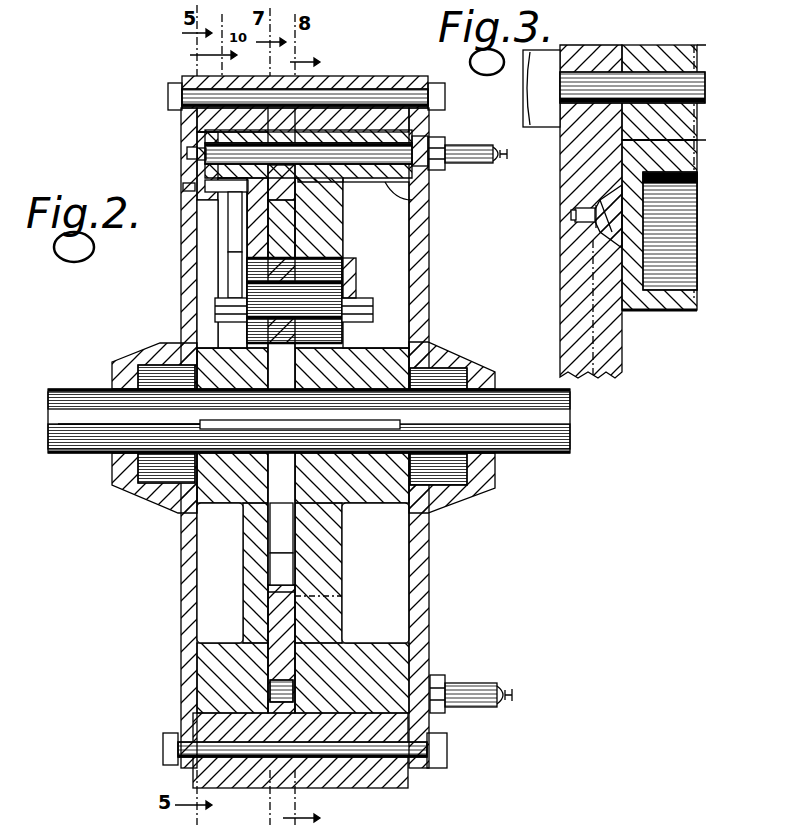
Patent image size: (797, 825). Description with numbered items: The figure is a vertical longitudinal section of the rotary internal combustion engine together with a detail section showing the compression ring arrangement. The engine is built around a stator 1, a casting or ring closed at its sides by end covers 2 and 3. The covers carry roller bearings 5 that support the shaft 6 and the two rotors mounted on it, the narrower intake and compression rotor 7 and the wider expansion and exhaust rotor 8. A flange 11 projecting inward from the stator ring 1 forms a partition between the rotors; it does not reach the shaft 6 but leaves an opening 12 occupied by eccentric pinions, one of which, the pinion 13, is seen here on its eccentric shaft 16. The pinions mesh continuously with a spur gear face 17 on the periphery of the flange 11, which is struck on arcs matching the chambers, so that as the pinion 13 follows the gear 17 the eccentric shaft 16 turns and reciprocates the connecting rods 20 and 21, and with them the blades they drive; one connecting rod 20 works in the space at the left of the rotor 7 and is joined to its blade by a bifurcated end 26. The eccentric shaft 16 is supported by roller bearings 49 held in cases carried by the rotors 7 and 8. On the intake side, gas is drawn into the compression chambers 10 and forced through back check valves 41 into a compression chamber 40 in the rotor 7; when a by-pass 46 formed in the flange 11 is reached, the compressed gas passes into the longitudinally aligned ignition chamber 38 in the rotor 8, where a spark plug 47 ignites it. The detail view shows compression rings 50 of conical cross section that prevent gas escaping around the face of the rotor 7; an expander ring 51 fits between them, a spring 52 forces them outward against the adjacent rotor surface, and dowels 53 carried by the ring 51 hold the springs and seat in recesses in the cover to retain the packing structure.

In FIG. 2, the stator 1 is at (372, 77).
In FIG. 3, the stator 1 is at (645, 50).
In FIG. 2, the end cover 2 is at (185, 291).
In FIG. 3, the end cover 2 is at (565, 333).
In FIG. 2, the end cover 3 is at (430, 277).
In FIG. 2, the roller bearings 5 is at (450, 372).
In FIG. 2, the shaft 6 is at (572, 440).
In FIG. 2, the intake and compression rotor 7 is at (183, 187).
In FIG. 3, the intake and compression rotor 7 is at (620, 150).
In FIG. 2, the expansion and exhaust rotor 8 is at (405, 188).
In FIG. 2, the compression chambers 10 is at (224, 263).
In FIG. 2, the flange 11 is at (232, 235).
In FIG. 2, the opening 12 is at (275, 533).
In FIG. 2, the eccentric pinion 13 is at (240, 337).
In FIG. 2, the eccentric shaft 16 is at (340, 292).
In FIG. 2, the spur gear face 17 is at (275, 573).
In FIG. 2, the connecting rod 20 is at (232, 283).
In FIG. 2, the connecting rod 21 is at (356, 269).
In FIG. 2, the bifurcated end 26 is at (240, 190).
In FIG. 2, the ignition chamber 38 is at (412, 131).
In FIG. 2, the compression chamber 40 is at (205, 172).
In FIG. 3, the compression chamber 40 is at (690, 246).
In FIG. 2, the back check valves 41 is at (197, 148).
In FIG. 2, the by-pass 46 is at (283, 140).
In FIG. 2, the spark plug 47 is at (472, 148).
In FIG. 2, the roller bearings 49 is at (240, 262).
In FIG. 2, the compression rings 50 is at (197, 156).
In FIG. 3, the compression rings 50 is at (600, 192).
In FIG. 3, the expander ring 51 is at (595, 242).
In FIG. 3, the spring 52 is at (598, 236).
In FIG. 3, the dowels 53 is at (574, 222).